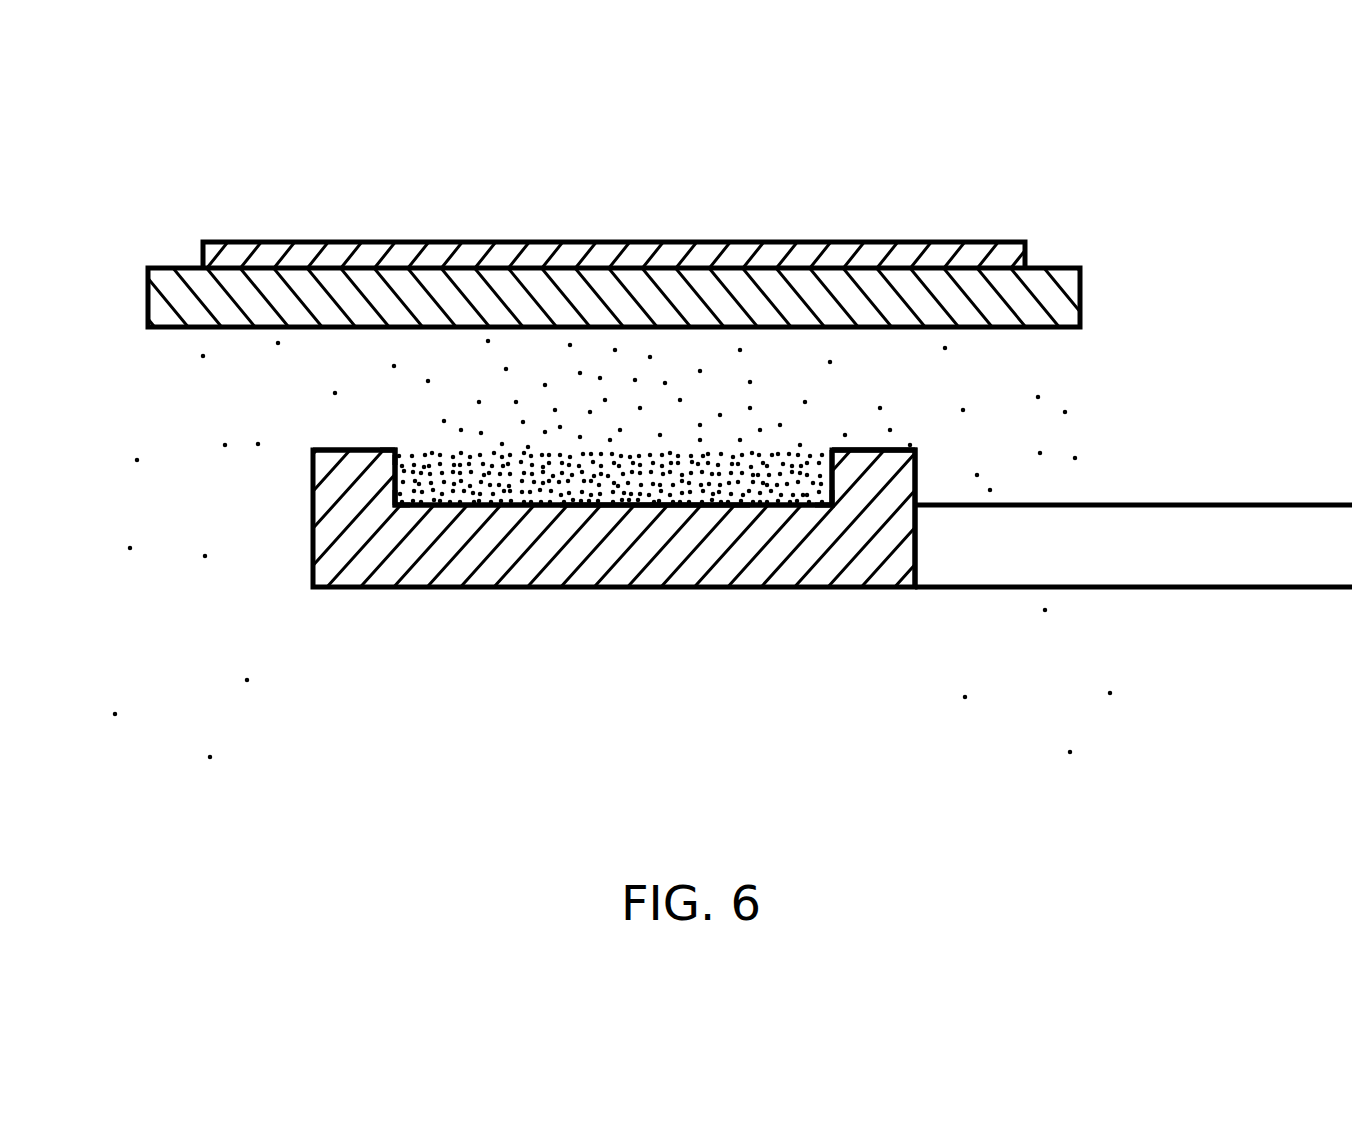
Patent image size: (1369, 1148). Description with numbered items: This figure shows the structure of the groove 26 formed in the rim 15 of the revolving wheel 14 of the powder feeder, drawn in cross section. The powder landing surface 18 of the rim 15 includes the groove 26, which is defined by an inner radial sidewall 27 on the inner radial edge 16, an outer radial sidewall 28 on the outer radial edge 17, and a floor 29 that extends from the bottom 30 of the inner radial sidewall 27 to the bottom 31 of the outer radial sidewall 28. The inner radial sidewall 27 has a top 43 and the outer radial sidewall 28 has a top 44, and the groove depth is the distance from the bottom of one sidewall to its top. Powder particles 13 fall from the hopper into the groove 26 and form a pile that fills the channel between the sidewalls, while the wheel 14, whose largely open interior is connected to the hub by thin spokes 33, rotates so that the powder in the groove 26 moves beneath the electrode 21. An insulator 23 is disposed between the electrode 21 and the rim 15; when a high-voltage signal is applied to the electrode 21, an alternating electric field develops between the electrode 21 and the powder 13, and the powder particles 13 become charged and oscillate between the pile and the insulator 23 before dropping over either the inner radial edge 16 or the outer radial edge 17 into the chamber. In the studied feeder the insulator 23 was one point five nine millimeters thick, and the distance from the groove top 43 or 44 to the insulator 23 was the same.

The powder particles 13 is at (498, 445).
The revolving wheel 14 is at (987, 588).
The rim 15 is at (394, 587).
The inner radial edge 16 is at (918, 453).
The outer radial edge 17 is at (313, 452).
The powder landing surface 18 is at (605, 504).
The electrode 21 is at (265, 240).
The insulator 23 is at (1072, 265).
The groove 26 is at (697, 507).
The inner radial sidewall 27 is at (834, 463).
The outer radial sidewall 28 is at (395, 453).
The floor 29 is at (615, 507).
The bottom of inner radial sidewall 30 is at (832, 505).
The bottom of outer radial sidewall 31 is at (395, 505).
The spokes 33 is at (1263, 562).
The top of inner radial sidewall 43 is at (830, 455).
The top of outer radial sidewall 44 is at (394, 483).